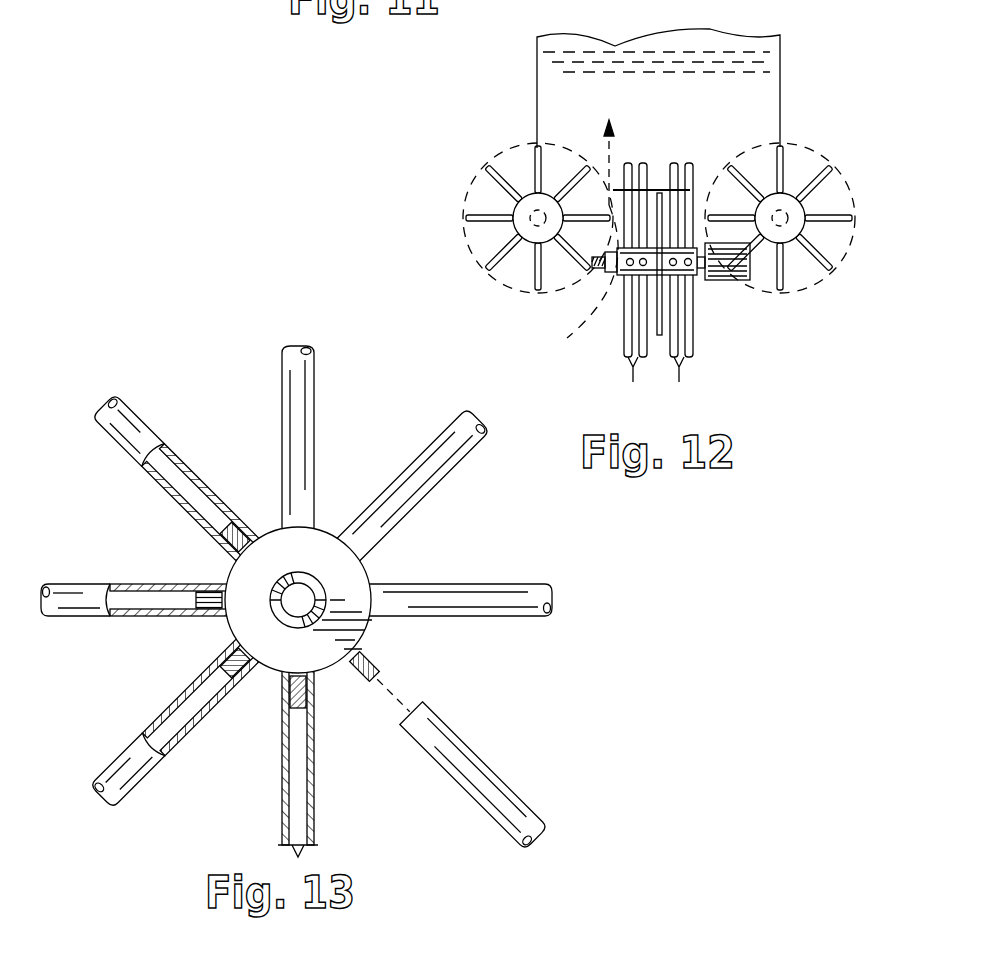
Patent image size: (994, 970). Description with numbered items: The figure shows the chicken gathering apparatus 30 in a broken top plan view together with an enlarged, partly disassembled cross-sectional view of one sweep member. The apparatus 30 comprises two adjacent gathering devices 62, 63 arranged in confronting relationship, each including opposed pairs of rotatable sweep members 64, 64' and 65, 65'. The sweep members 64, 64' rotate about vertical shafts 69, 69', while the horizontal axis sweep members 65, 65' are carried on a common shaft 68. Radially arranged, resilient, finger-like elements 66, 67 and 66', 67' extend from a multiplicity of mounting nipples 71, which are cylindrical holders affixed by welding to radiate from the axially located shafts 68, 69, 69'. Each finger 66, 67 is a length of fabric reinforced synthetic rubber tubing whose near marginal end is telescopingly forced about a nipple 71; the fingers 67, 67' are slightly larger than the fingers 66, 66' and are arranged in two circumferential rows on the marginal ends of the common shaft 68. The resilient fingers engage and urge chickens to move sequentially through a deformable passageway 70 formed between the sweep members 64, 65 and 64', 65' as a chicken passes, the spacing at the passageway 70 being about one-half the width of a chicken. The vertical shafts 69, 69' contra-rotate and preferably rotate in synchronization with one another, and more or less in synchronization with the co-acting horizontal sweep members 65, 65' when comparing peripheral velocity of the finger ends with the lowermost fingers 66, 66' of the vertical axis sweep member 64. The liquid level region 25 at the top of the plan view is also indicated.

In FIG. 12, the liquid bath tank 25 is at (604, 101).
In FIG. 12, the chicken gathering apparatus 30 is at (492, 128).
In FIG. 12, the gathering device 62 is at (740, 303).
In FIG. 12, the gathering device 63 is at (596, 333).
In FIG. 12, the rotatable sweep member 64 is at (508, 228).
In FIG. 13, the rotatable sweep member 64 is at (296, 569).
In FIG. 12, the rotatable sweep member 64' is at (808, 226).
In FIG. 12, the rotatable sweep member 65 is at (637, 221).
In FIG. 12, the rotatable sweep member 65' is at (709, 229).
In FIG. 12, the resilient finger-like element 66 is at (518, 218).
In FIG. 13, the resilient finger-like element 66 is at (296, 601).
In FIG. 12, the resilient finger-like element 66' is at (802, 218).
In FIG. 12, the resilient finger-like element 67 is at (636, 383).
In FIG. 12, the resilient finger-like element 67' is at (687, 383).
In FIG. 12, the common shaft 68 is at (657, 194).
In FIG. 12, the vertical shaft 69 is at (490, 225).
In FIG. 13, the vertical shaft 69 is at (298, 563).
In FIG. 12, the vertical shaft 69' is at (827, 228).
In FIG. 12, the deformable passageway 70 is at (607, 150).
In FIG. 13, the mounting nipple 71 is at (208, 597).